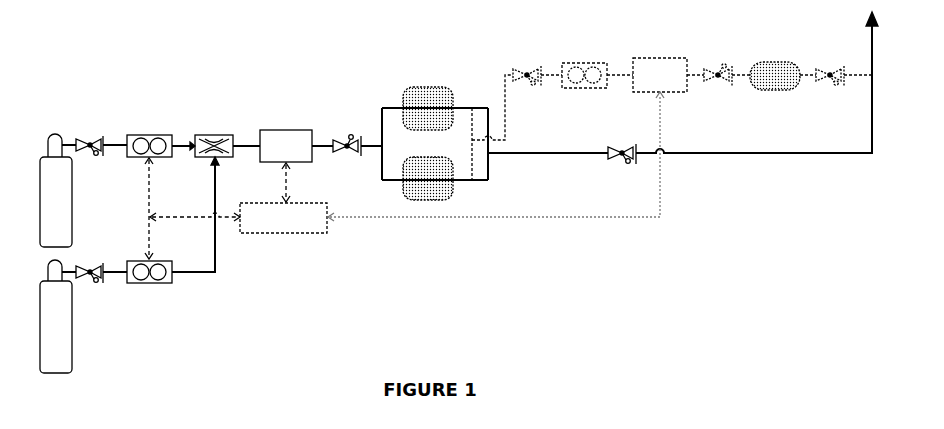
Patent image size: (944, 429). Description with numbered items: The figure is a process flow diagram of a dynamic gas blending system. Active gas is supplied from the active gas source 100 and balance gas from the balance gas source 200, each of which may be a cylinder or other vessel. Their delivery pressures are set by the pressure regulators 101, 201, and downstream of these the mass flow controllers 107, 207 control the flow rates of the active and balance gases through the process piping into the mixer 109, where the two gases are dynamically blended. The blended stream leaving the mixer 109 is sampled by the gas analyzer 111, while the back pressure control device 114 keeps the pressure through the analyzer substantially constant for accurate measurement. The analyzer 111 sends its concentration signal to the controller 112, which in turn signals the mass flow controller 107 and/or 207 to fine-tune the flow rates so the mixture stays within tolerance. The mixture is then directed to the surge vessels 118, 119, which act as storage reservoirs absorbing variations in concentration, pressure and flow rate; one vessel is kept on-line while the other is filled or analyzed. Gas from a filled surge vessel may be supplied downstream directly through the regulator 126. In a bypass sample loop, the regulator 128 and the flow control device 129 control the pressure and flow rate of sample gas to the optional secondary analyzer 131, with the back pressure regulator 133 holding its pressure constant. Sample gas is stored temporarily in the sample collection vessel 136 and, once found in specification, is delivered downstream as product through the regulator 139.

The active gas source 100 is at (56, 190).
The pressure regulator 101 is at (89, 138).
The mass flow controller 107 is at (149, 138).
The mixer 109 is at (214, 138).
The gas analyzer 111 is at (286, 146).
The controller 112 is at (283, 218).
The back pressure control device 114 is at (347, 149).
The surge vessel 118 is at (428, 108).
The surge vessel 119 is at (428, 178).
The regulator 126 is at (527, 69).
The regulator 128 is at (622, 170).
The flow control device 129 is at (584, 68).
The secondary analyzer 131 is at (660, 75).
The back pressure regulator 133 is at (718, 79).
The sample collection vessel 136 is at (775, 76).
The regulator 139 is at (830, 70).
The balance gas source 200 is at (56, 316).
The pressure regulator 201 is at (89, 266).
The mass flow controller 207 is at (149, 279).